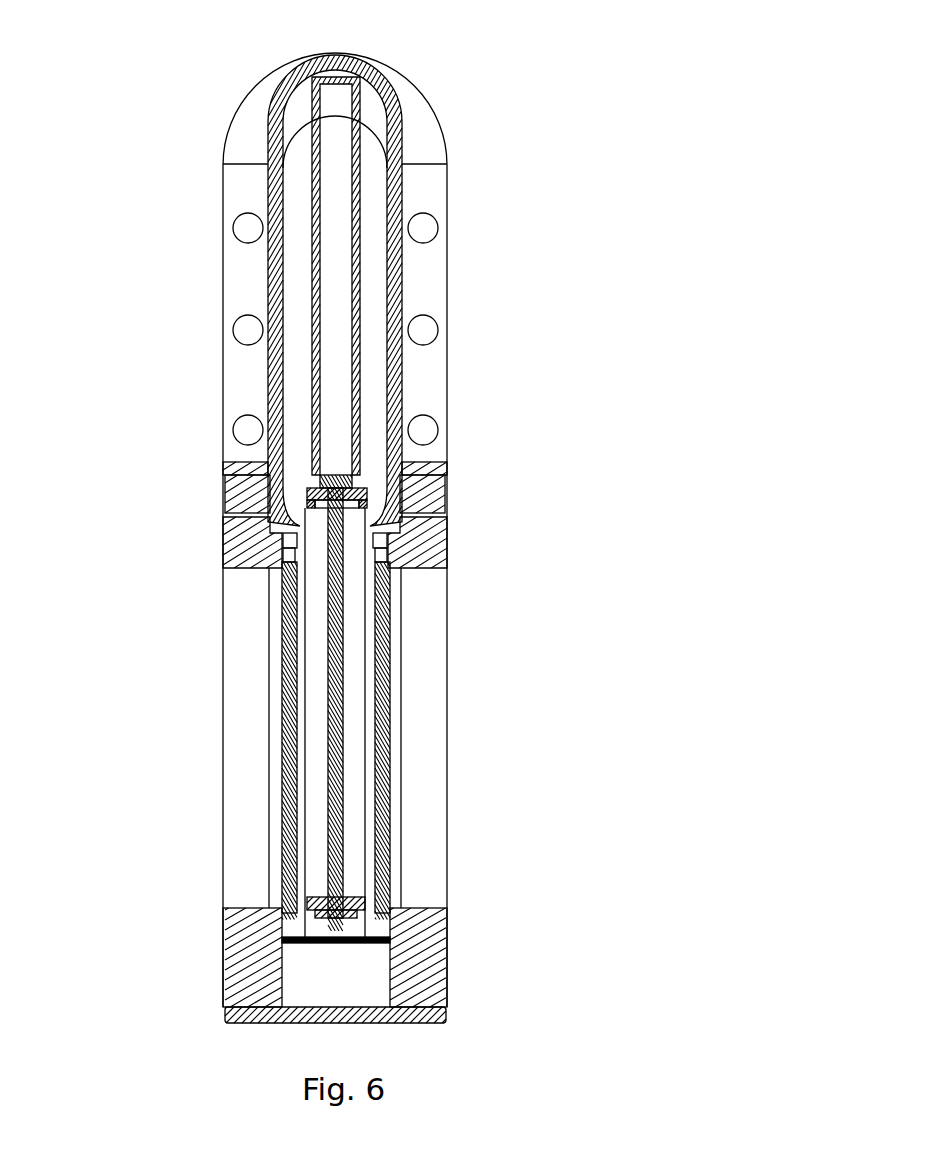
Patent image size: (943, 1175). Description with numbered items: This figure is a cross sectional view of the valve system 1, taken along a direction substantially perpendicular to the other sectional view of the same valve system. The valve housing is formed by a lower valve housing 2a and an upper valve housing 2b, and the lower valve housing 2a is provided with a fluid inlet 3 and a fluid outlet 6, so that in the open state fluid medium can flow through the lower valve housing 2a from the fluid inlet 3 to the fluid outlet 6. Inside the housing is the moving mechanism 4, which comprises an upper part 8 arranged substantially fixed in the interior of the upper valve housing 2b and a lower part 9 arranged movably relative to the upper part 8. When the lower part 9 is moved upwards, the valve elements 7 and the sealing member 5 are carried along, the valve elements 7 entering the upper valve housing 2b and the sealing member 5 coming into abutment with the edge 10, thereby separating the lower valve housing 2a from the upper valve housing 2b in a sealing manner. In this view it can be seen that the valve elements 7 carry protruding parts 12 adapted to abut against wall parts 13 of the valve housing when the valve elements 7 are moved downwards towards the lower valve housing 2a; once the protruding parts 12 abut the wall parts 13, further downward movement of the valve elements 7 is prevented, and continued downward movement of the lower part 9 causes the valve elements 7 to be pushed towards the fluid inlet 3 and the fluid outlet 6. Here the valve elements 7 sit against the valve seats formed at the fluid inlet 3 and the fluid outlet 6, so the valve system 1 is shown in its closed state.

The valve system 1 is at (520, 77).
The lower valve housing 2a is at (412, 942).
The upper valve housing 2b is at (427, 267).
The fluid inlet 3 is at (243, 756).
The moving mechanism 4 is at (365, 365).
The sealing member 5 is at (335, 943).
The fluid outlet 6 is at (437, 703).
The valve elements 7 is at (385, 783).
The upper part 8 is at (315, 257).
The lower part 9 is at (318, 705).
The edge 10 is at (272, 568).
The protruding parts 12 is at (292, 525).
The wall parts 13 is at (272, 547).